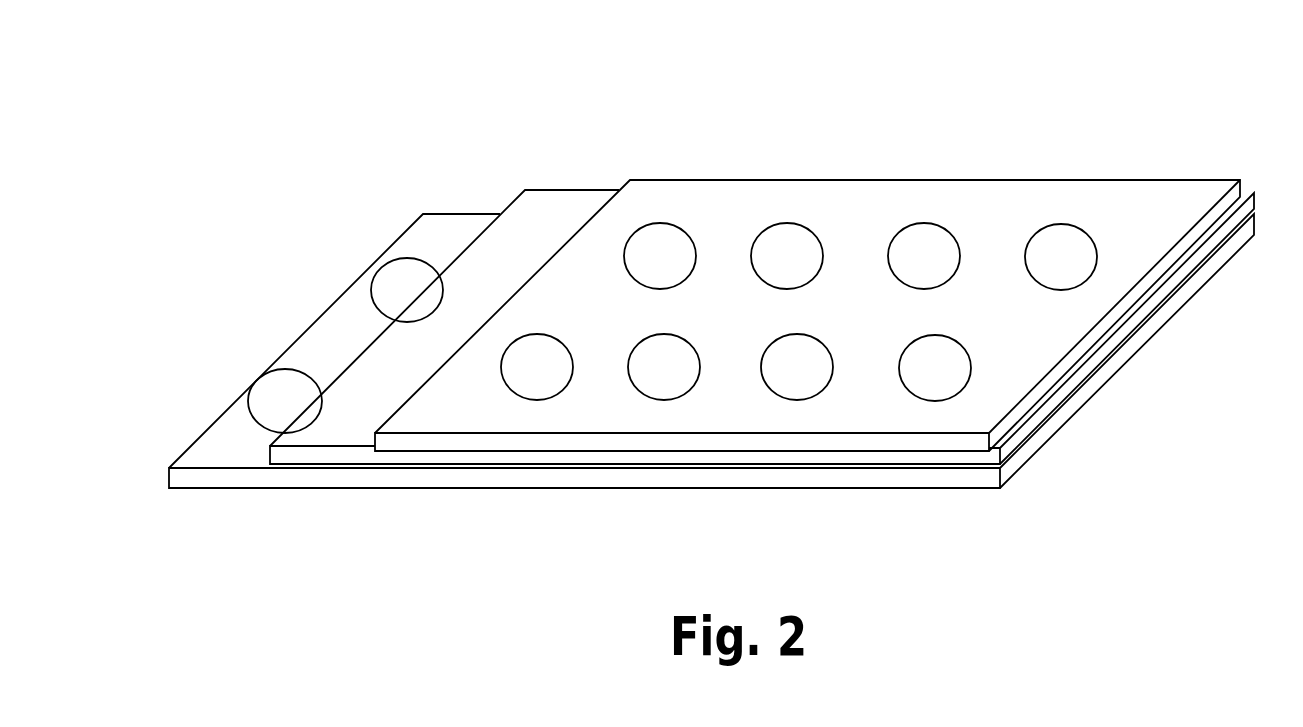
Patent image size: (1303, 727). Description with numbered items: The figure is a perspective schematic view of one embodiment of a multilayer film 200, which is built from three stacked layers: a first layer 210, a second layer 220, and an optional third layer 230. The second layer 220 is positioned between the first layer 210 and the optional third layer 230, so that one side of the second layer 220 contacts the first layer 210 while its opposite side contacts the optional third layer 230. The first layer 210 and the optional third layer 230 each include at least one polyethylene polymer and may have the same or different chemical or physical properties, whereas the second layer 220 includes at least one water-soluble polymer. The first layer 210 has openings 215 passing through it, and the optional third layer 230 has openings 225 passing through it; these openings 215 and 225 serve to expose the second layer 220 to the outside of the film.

The multilayer film 200 is at (323, 108).
The first layer 210 is at (813, 179).
The openings 215 is at (660, 256).
The second layer 220 is at (567, 190).
The openings 225 is at (408, 290).
The optional third layer 230 is at (453, 213).